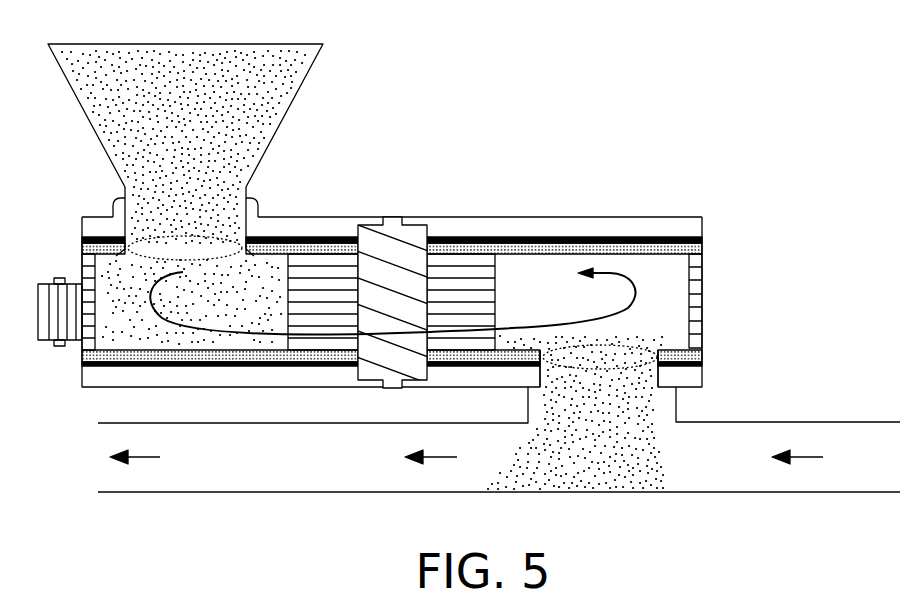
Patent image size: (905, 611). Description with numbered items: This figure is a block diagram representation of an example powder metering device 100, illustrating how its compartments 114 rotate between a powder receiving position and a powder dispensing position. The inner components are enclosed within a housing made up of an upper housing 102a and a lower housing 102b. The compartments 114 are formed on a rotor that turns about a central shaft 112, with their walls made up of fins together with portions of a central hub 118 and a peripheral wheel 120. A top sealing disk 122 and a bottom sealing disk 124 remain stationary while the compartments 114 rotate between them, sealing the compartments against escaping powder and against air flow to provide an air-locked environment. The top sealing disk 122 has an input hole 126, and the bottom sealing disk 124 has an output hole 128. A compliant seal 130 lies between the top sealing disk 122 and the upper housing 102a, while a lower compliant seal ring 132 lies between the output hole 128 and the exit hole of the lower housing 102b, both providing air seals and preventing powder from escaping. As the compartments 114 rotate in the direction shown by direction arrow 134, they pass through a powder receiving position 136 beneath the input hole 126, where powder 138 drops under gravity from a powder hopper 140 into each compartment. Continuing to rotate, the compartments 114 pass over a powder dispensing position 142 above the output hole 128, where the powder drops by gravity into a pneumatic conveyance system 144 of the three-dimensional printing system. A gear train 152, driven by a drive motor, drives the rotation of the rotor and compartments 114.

The powder metering device 100 is at (668, 158).
The upper housing 102a is at (702, 216).
The lower housing 102b is at (702, 387).
The central shaft 112 is at (412, 230).
The compartments 114 is at (104, 263).
The central hub 118 is at (488, 307).
The peripheral wheel 120 is at (702, 282).
The top sealing disk 122 is at (702, 249).
The bottom sealing disk 124 is at (702, 355).
The input hole 126 is at (137, 241).
The output hole 128 is at (553, 362).
The compliant seal 130 is at (702, 240).
The lower compliant seal ring 132 is at (702, 363).
The direction arrow 134 is at (627, 283).
The powder receiving position 136 is at (235, 241).
The powder 138 is at (95, 120).
The powder hopper 140 is at (302, 88).
The powder dispensing position 142 is at (656, 338).
The pneumatic conveyance system 144 is at (132, 492).
The gear train 152 is at (53, 338).